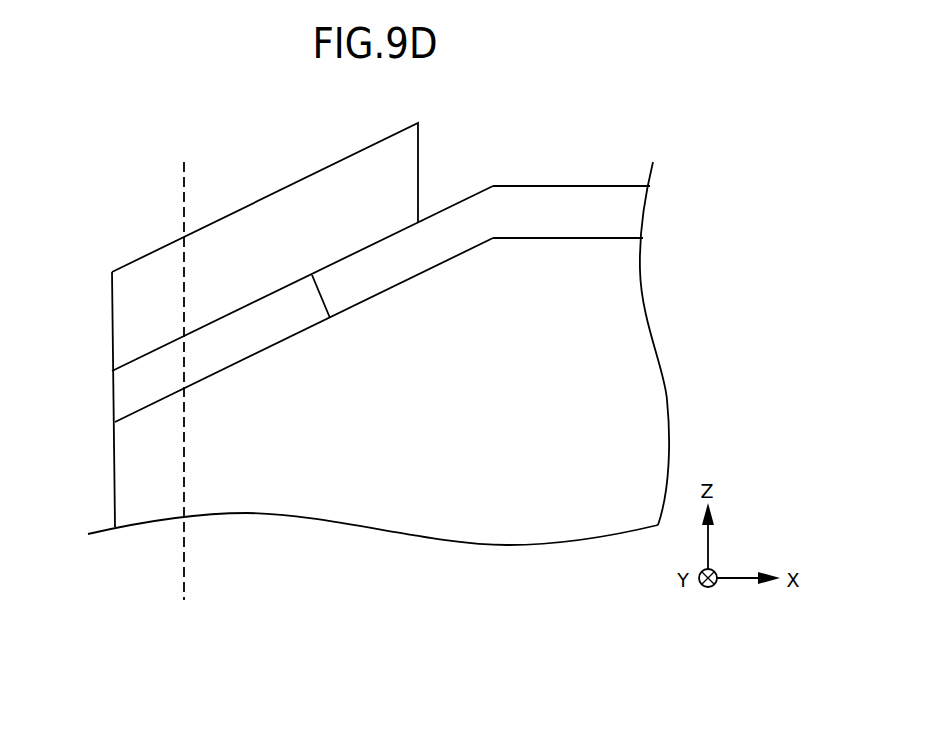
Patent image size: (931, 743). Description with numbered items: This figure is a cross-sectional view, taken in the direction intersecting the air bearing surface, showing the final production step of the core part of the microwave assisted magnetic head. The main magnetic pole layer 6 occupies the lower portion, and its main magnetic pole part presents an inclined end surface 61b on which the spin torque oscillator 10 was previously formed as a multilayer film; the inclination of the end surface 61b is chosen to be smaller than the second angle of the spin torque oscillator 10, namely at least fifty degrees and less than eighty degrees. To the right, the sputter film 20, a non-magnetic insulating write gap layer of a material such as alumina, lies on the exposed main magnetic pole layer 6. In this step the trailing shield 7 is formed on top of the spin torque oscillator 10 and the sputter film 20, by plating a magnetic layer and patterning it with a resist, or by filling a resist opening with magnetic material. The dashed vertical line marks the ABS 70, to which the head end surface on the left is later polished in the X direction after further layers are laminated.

The main magnetic pole layer 6 is at (298, 478).
The trailing shield 7 is at (387, 180).
The spin torque oscillator 10 is at (277, 313).
The sputter film 20 is at (565, 203).
The end surface 61b is at (236, 362).
The ABS 70 is at (182, 216).